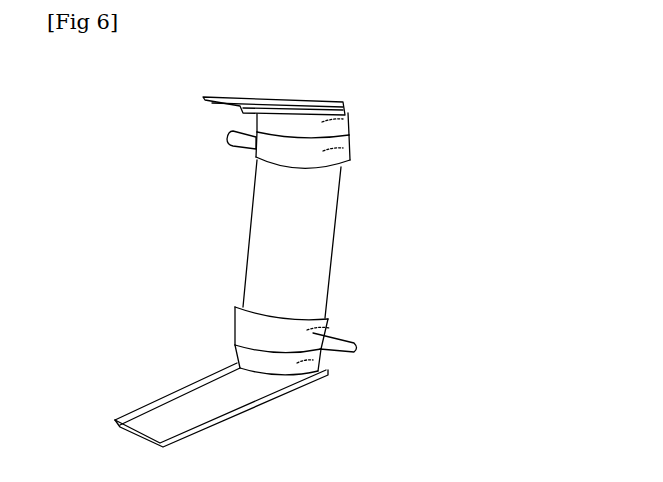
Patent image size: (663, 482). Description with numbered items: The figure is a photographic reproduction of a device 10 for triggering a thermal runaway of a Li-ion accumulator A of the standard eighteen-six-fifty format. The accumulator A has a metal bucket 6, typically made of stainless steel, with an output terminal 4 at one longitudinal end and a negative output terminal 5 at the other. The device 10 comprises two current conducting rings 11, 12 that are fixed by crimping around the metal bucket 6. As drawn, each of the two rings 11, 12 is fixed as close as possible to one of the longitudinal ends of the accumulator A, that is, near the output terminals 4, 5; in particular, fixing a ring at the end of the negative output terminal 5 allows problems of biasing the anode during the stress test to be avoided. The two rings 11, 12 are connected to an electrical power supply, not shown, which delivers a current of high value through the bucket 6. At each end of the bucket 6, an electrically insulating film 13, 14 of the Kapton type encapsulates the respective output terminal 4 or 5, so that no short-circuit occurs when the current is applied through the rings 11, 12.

The device for triggering thermal runaway 10 is at (159, 226).
The electrically insulating film 14 is at (240, 107).
The output terminal 4 is at (350, 120).
The current conducting ring 12 is at (352, 147).
The metal bucket 6 is at (312, 243).
The current conducting ring 11 is at (323, 325).
The negative output terminal 5 is at (318, 368).
The electrically insulating film 13 is at (197, 405).
The Li-ion accumulator A is at (383, 253).